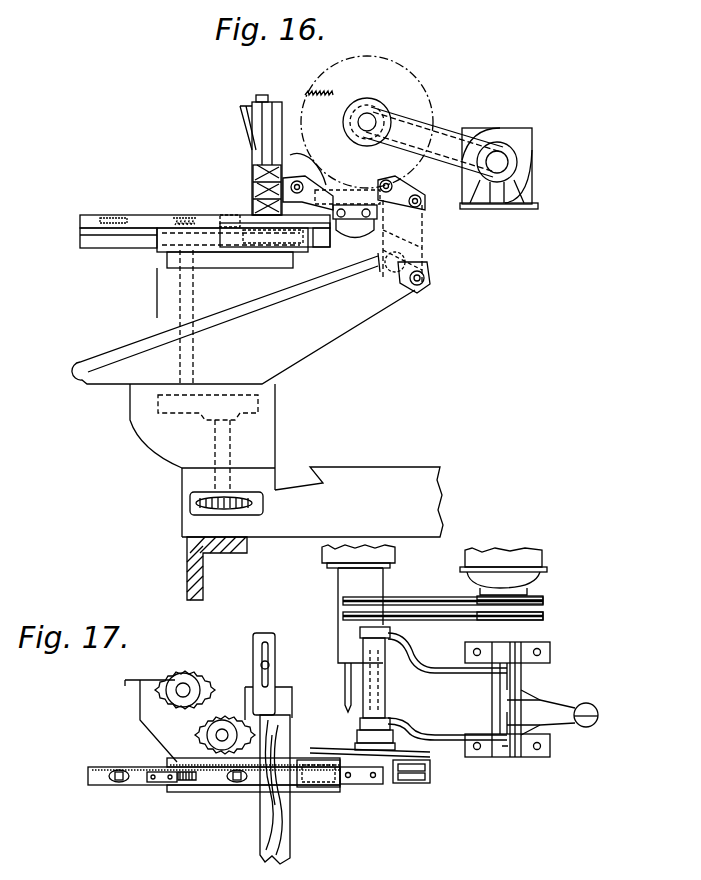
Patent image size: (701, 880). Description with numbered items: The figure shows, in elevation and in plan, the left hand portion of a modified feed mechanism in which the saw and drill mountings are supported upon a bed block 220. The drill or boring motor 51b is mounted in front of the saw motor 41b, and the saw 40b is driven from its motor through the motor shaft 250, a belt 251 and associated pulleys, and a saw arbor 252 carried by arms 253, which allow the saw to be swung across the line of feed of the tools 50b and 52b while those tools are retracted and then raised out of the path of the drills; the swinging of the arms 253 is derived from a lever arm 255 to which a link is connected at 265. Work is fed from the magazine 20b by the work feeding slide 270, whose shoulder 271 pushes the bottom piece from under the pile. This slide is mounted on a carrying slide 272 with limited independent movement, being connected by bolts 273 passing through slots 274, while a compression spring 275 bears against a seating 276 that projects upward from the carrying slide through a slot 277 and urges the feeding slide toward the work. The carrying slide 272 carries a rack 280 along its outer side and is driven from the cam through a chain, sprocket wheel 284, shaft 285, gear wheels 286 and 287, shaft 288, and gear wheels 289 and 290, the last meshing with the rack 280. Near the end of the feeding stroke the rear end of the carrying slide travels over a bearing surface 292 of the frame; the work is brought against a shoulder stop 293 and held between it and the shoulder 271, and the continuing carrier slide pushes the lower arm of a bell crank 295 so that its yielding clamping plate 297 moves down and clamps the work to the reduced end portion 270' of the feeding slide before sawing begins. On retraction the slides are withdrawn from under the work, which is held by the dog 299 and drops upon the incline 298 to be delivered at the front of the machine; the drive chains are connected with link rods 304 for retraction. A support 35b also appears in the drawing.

In FIG. 16, the magazine 20b is at (281, 103).
In FIG. 17, the magazine 20b is at (288, 710).
In FIG. 16, the saw 40b is at (387, 84).
In FIG. 17, the saw 40b is at (440, 750).
In FIG. 16, the saw motor 41b is at (512, 128).
In FIG. 17, the saw motor 41b is at (512, 558).
In FIG. 16, the tool 50b is at (342, 208).
In FIG. 17, the tool 50b is at (346, 697).
In FIG. 16, the drill or boring motor 51b is at (395, 252).
In FIG. 17, the drill or boring motor 51b is at (357, 578).
In FIG. 16, the tool 52b is at (396, 178).
In FIG. 16, the support leg 35b is at (198, 572).
In FIG. 16, the bed block 220 is at (376, 492).
In FIG. 17, the motor shaft 250 is at (514, 596).
In FIG. 16, the belt 251 is at (445, 131).
In FIG. 17, the belt 251 is at (437, 619).
In FIG. 16, the saw arbor 252 is at (372, 119).
In FIG. 17, the saw arbor 252 is at (385, 686).
In FIG. 17, the arm 253 is at (430, 667).
In FIG. 17, the lever arm 255 is at (527, 710).
In FIG. 17, the connection of link with lever 265 is at (633, 704).
In FIG. 16, the work feeding slide 270 is at (205, 199).
In FIG. 17, the work feeding slide 270 is at (101, 817).
In FIG. 16, the reduced end portion of the feeding slide 270' is at (232, 270).
In FIG. 16, the shoulder 271 is at (247, 213).
In FIG. 16, the carrying slide 272 is at (125, 242).
In FIG. 16, the bolt 273 is at (105, 213).
In FIG. 17, the bolt 273 is at (115, 787).
In FIG. 16, the slot 274 is at (120, 213).
In FIG. 17, the slot 274 is at (125, 787).
In FIG. 16, the compression spring 275 is at (190, 214).
In FIG. 17, the compression spring 275 is at (183, 787).
In FIG. 17, the seating 276 is at (160, 787).
In FIG. 17, the slot 277 is at (190, 787).
In FIG. 17, the rack 280 is at (102, 767).
In FIG. 16, the sprocket wheel 284 is at (197, 503).
In FIG. 16, the shaft 285 is at (218, 455).
In FIG. 16, the gear wheel 286 is at (280, 402).
In FIG. 16, the gear wheel 287 is at (158, 405).
In FIG. 16, the shaft 288 is at (183, 353).
In FIG. 17, the shaft 288 is at (187, 688).
In FIG. 17, the gear wheel 289 is at (183, 682).
In FIG. 17, the gear wheel 290 is at (205, 712).
In FIG. 16, the bearing surface 292 is at (425, 237).
In FIG. 16, the shoulder stop 293 is at (378, 258).
In FIG. 17, the shoulder stop 293 is at (368, 788).
In FIG. 16, the bell crank 295 is at (425, 227).
In FIG. 17, the bell crank 295 is at (427, 773).
In FIG. 16, the yielding clamping plate 297 is at (326, 190).
In FIG. 17, the yielding clamping plate 297 is at (350, 790).
In FIG. 16, the incline 298 is at (340, 268).
In FIG. 16, the dog 299 is at (290, 155).
In FIG. 17, the link rod 304 is at (203, 874).